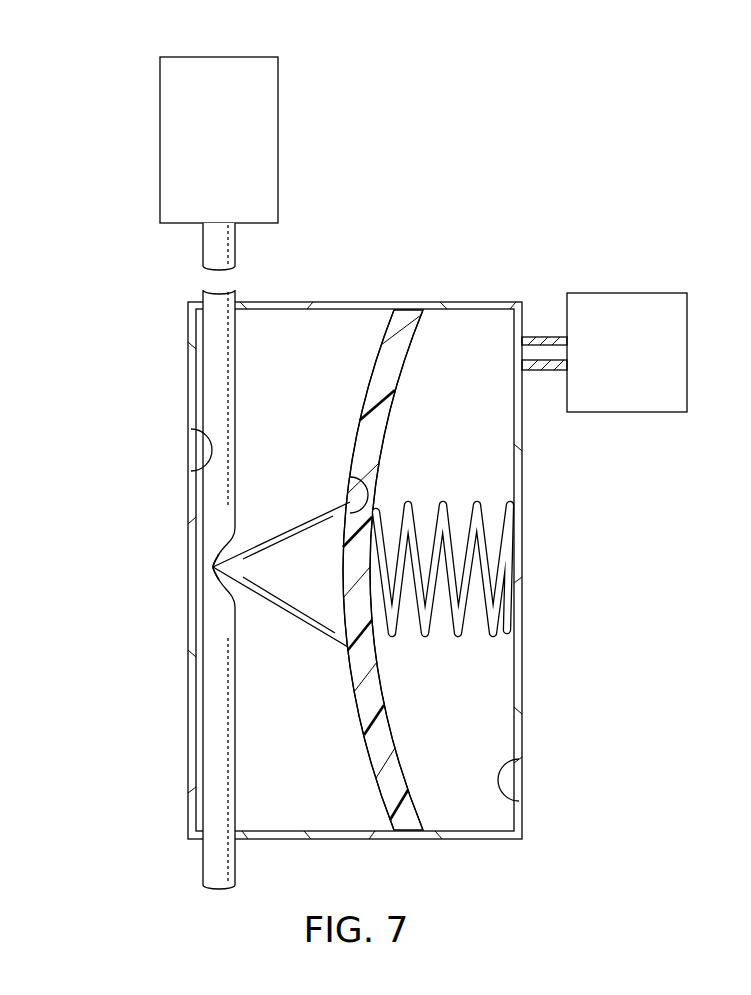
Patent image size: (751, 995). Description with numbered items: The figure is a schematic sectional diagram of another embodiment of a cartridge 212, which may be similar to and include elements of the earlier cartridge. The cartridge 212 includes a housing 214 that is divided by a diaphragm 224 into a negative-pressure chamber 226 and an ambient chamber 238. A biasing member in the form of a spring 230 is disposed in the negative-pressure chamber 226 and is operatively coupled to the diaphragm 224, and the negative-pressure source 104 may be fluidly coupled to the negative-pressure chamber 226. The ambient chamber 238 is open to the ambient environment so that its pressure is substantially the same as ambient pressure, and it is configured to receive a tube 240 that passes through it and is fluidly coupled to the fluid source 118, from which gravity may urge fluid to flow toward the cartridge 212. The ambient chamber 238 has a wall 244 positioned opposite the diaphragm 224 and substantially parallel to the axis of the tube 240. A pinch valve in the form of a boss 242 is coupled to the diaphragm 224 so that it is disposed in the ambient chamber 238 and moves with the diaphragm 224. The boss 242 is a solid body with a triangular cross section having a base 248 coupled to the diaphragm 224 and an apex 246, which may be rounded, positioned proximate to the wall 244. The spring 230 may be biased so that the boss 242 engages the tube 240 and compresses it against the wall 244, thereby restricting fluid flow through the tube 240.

The negative-pressure source 104 is at (606, 367).
The fluid source 118 is at (197, 153).
The cartridge 212 is at (450, 235).
The housing 214 is at (483, 302).
The diaphragm 224 is at (373, 380).
The negative-pressure chamber 226 is at (520, 805).
The spring 230 is at (460, 637).
The ambient chamber 238 is at (288, 814).
The tube 240 is at (202, 258).
The boss 242 is at (306, 612).
The wall 244 is at (190, 472).
The apex 246 is at (213, 567).
The base 248 is at (350, 486).